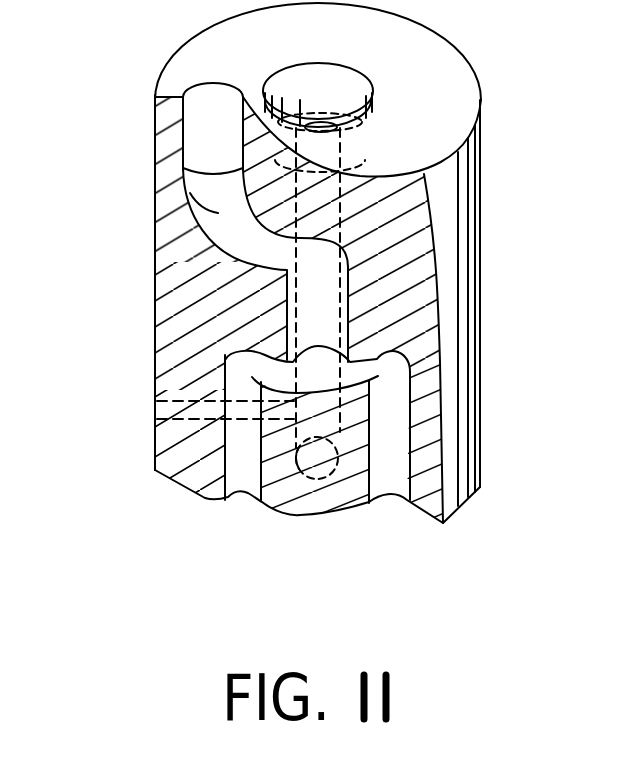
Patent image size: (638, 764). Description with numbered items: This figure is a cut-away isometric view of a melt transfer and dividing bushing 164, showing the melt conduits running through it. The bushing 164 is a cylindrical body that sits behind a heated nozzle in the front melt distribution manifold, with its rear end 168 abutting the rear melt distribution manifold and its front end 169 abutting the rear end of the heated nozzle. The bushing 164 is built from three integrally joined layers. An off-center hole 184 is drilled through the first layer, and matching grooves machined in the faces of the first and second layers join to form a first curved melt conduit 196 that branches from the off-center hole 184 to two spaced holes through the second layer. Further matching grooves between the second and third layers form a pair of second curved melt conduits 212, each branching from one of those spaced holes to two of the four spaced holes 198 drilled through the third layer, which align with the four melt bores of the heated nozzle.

The melt transfer and dividing bushing 164 is at (447, 262).
The rear end 168 is at (440, 70).
The front end 169 is at (307, 530).
The off-center hole 184 is at (207, 98).
The first curved melt conduit 196 is at (180, 262).
The spaced holes 198 is at (393, 441).
The second curved melt conduits 212 is at (357, 372).